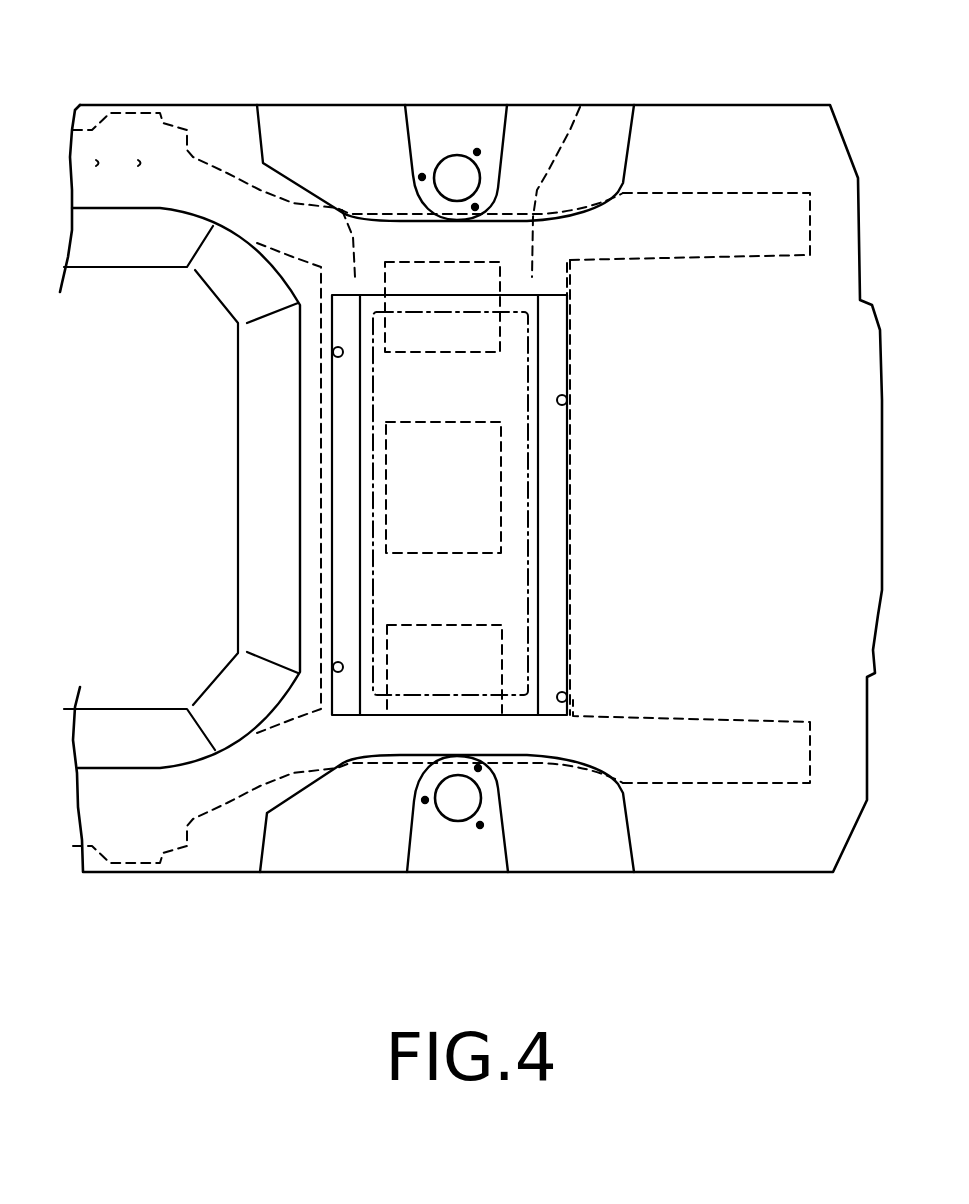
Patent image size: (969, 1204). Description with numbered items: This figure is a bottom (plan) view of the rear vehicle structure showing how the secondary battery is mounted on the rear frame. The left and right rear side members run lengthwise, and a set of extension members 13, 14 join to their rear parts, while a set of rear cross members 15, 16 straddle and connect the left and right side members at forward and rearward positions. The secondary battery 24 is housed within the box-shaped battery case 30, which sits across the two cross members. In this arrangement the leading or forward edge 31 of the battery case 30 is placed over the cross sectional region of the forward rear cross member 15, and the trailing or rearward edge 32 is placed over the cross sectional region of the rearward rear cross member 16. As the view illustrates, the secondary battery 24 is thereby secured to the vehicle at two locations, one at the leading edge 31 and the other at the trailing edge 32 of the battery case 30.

The extension member 13 is at (752, 193).
The extension member 14 is at (760, 783).
The rear cross member 15 is at (293, 103).
The rear cross member 16 is at (580, 107).
The secondary battery 24 is at (487, 698).
The battery case 30 is at (372, 715).
The leading edge 31 is at (343, 503).
The trailing edge 32 is at (560, 493).